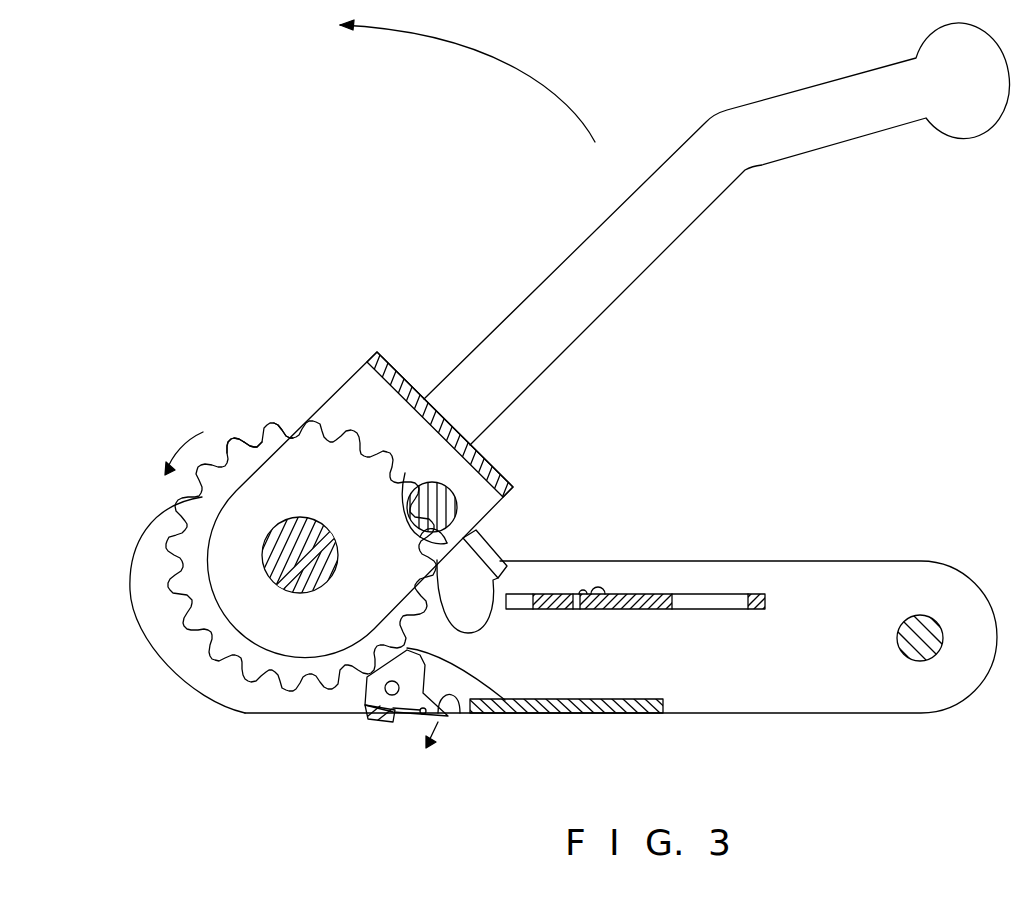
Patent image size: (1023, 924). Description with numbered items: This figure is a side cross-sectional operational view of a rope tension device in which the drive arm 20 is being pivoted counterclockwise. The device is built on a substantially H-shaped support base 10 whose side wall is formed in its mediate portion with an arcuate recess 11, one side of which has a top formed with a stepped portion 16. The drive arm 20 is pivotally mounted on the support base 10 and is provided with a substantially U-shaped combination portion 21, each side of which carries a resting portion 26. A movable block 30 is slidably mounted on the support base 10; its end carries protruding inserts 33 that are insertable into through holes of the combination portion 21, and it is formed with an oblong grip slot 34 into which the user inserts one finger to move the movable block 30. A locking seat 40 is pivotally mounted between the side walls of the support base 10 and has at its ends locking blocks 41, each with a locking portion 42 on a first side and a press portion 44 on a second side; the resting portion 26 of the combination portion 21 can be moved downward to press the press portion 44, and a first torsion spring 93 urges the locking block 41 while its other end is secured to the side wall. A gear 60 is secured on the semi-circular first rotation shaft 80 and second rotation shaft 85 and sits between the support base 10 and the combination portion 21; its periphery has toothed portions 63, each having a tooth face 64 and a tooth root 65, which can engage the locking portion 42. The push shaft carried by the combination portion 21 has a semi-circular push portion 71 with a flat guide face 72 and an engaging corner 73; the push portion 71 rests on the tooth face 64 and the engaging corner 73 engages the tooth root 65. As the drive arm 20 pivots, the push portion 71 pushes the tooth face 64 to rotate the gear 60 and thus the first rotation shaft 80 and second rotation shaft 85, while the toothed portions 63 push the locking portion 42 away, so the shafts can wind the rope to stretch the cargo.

The support base 10 is at (870, 583).
The arcuate recess 11 is at (470, 627).
The stepped portion 16 is at (243, 705).
The drive arm 20 is at (426, 306).
The combination portion 21 is at (355, 387).
The resting portion 26 is at (478, 550).
The movable block 30 is at (628, 598).
The protruding insert 33 is at (522, 602).
The oblong grip slot 34 is at (720, 603).
The locking seat 40 is at (383, 713).
The locking block 41 is at (377, 688).
The locking portion 42 is at (420, 660).
The press portion 44 is at (460, 700).
The gear 60 is at (202, 547).
The toothed portion 63 is at (232, 443).
The tooth face 64 is at (282, 440).
The tooth root 65 is at (253, 448).
The push portion 71 is at (443, 477).
The flat guide face 72 is at (460, 503).
The engaging corner 73 is at (405, 497).
The first rotation shaft 80 is at (283, 552).
The second rotation shaft 85 is at (313, 587).
The first torsion spring 93 is at (427, 745).